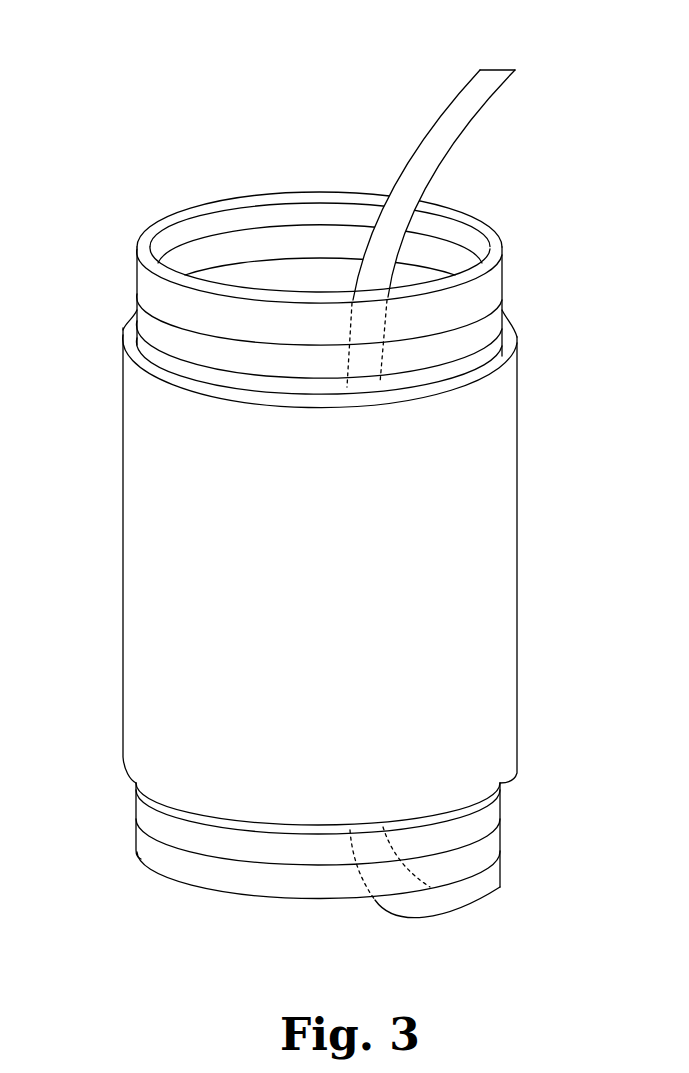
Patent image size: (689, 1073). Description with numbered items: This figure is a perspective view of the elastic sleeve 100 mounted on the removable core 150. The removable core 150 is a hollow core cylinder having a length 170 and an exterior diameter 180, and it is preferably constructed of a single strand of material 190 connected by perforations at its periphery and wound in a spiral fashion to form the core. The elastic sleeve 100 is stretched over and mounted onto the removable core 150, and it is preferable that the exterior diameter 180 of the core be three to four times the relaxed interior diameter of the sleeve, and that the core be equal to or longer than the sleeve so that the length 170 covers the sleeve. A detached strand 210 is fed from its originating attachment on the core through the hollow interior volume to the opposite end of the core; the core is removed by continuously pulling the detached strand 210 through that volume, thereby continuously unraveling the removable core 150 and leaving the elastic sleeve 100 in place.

The elastic sleeve 100 is at (123, 537).
The removable core 150 is at (369, 468).
The length 170 is at (320, 301).
The exterior diameter 180 is at (136, 865).
The single strand of material 190 is at (183, 339).
The detached strand 210 is at (505, 60).